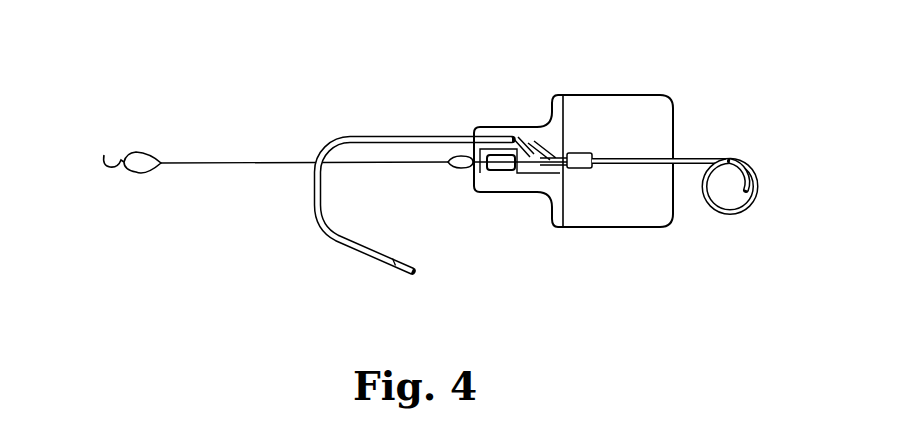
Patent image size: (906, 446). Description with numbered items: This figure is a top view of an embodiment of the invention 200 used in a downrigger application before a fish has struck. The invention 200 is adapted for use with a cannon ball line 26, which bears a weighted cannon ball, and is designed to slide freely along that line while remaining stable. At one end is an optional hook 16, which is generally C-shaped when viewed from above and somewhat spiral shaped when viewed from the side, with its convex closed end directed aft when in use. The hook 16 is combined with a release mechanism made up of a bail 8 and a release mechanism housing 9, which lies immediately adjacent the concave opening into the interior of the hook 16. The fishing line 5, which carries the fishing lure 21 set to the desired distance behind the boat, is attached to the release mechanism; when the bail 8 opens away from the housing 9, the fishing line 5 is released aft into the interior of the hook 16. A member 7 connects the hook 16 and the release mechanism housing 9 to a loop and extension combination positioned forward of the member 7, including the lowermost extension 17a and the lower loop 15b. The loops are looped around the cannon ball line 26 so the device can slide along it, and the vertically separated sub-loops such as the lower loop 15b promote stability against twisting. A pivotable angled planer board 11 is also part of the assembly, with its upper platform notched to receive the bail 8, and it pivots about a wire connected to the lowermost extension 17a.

The invention 200 is at (136, 94).
The fishing lure 21 is at (143, 175).
The fishing line 5 is at (282, 162).
The hook 16 is at (343, 236).
The planer board 11 is at (640, 107).
The release mechanism bail 8 is at (482, 163).
The release mechanism housing 9 is at (555, 152).
The member 7 is at (573, 163).
The lowermost extension 17a is at (653, 162).
The lower loop 15b is at (712, 205).
The cannon ball line 26 is at (746, 190).